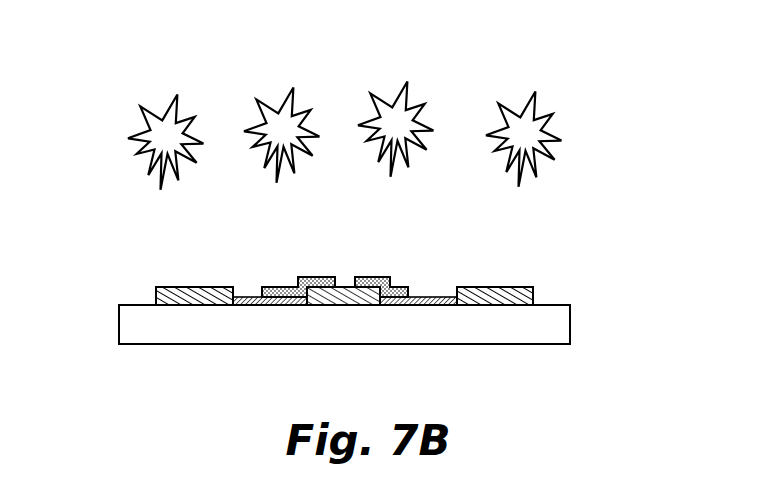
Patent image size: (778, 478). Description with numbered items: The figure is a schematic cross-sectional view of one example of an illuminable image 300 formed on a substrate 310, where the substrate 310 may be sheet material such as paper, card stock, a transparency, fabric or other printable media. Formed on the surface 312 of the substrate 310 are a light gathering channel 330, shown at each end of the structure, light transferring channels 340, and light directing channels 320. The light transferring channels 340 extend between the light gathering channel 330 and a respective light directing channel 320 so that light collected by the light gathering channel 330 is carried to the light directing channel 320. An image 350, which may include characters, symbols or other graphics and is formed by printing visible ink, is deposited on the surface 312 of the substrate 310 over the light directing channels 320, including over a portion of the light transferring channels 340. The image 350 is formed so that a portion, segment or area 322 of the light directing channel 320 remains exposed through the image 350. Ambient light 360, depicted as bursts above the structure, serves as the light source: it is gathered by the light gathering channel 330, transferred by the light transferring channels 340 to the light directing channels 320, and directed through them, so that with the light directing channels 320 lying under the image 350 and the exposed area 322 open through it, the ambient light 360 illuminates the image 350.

The illuminable image 300 is at (573, 207).
The substrate 310 is at (563, 323).
The surface 312 is at (140, 306).
The light directing channels 320 is at (307, 283).
The exposed portions of light directing channel 322 is at (345, 285).
The light gathering channel 330 is at (195, 292).
The light transferring channels 340 is at (245, 298).
The image 350 is at (370, 283).
The ambient light 360 is at (199, 100).